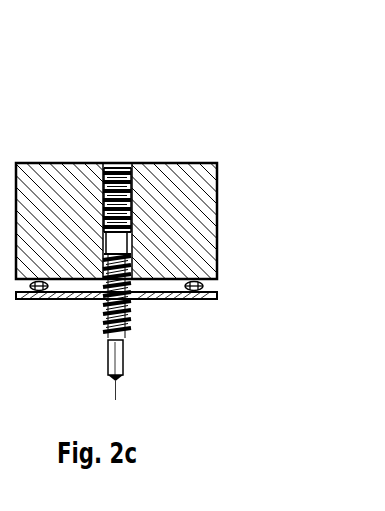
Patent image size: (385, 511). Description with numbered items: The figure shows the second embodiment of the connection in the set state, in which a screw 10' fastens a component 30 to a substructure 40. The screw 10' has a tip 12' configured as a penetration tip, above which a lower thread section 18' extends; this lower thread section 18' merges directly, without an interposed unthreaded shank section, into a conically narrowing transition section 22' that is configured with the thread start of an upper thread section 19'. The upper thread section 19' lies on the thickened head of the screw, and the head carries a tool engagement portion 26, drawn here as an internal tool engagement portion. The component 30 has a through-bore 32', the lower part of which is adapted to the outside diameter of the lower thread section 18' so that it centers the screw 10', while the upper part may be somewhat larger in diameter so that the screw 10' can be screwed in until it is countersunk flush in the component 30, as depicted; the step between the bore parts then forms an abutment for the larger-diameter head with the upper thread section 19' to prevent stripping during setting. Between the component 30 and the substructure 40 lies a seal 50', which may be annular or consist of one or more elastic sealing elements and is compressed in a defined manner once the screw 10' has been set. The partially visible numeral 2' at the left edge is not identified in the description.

The screw 10' is at (152, 222).
The tool engagement portion 26 is at (113, 166).
The upper thread section 19' is at (160, 130).
The component 30 is at (167, 180).
The transition section 22' is at (186, 223).
The through-bore 32' is at (185, 221).
The seal 50' is at (149, 277).
The substructure 40 is at (185, 300).
The lower thread section 18' is at (145, 327).
The tip 12' is at (148, 387).
The screw 2' is at (6, 210).